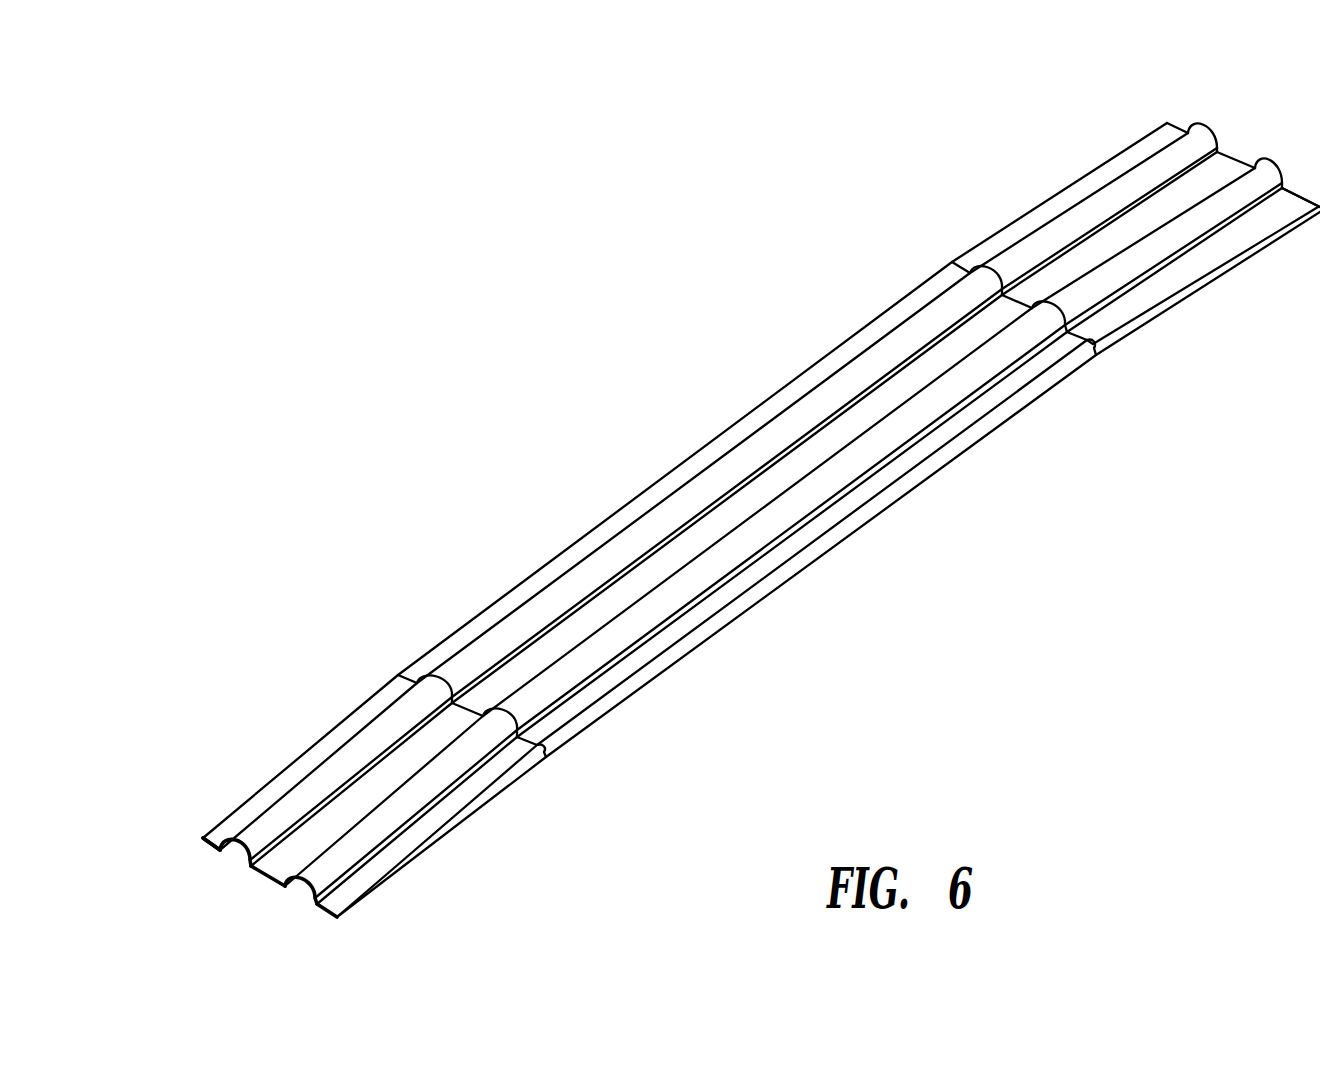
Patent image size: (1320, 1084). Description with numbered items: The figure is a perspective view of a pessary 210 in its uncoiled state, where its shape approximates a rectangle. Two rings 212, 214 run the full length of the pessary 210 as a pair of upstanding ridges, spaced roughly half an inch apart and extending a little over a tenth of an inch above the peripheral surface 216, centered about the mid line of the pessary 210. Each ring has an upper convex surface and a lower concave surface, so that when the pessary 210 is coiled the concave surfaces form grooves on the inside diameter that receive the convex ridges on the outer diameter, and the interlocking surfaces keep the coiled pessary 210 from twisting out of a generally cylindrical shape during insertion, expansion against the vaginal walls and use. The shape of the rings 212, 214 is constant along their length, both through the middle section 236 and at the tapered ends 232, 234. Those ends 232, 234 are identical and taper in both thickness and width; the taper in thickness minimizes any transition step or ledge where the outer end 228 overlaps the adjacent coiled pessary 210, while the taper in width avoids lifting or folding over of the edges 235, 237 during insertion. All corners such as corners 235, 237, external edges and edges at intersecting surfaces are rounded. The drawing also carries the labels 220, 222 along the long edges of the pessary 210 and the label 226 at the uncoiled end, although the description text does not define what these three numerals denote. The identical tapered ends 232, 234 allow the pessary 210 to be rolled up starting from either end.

The pessary 210 is at (540, 490).
The ring 212 is at (382, 732).
The ring 214 is at (452, 772).
The peripheral surface 216 is at (600, 624).
The near longitudinal edge 220 is at (785, 590).
The far longitudinal edge 222 is at (776, 392).
The end flat portion 226 is at (259, 873).
The outer end 228 is at (1233, 158).
The tapered end 232 is at (282, 768).
The tapered end 234 is at (1066, 184).
The corner 235 is at (203, 840).
The middle section 236 is at (663, 476).
The corner 237 is at (338, 918).